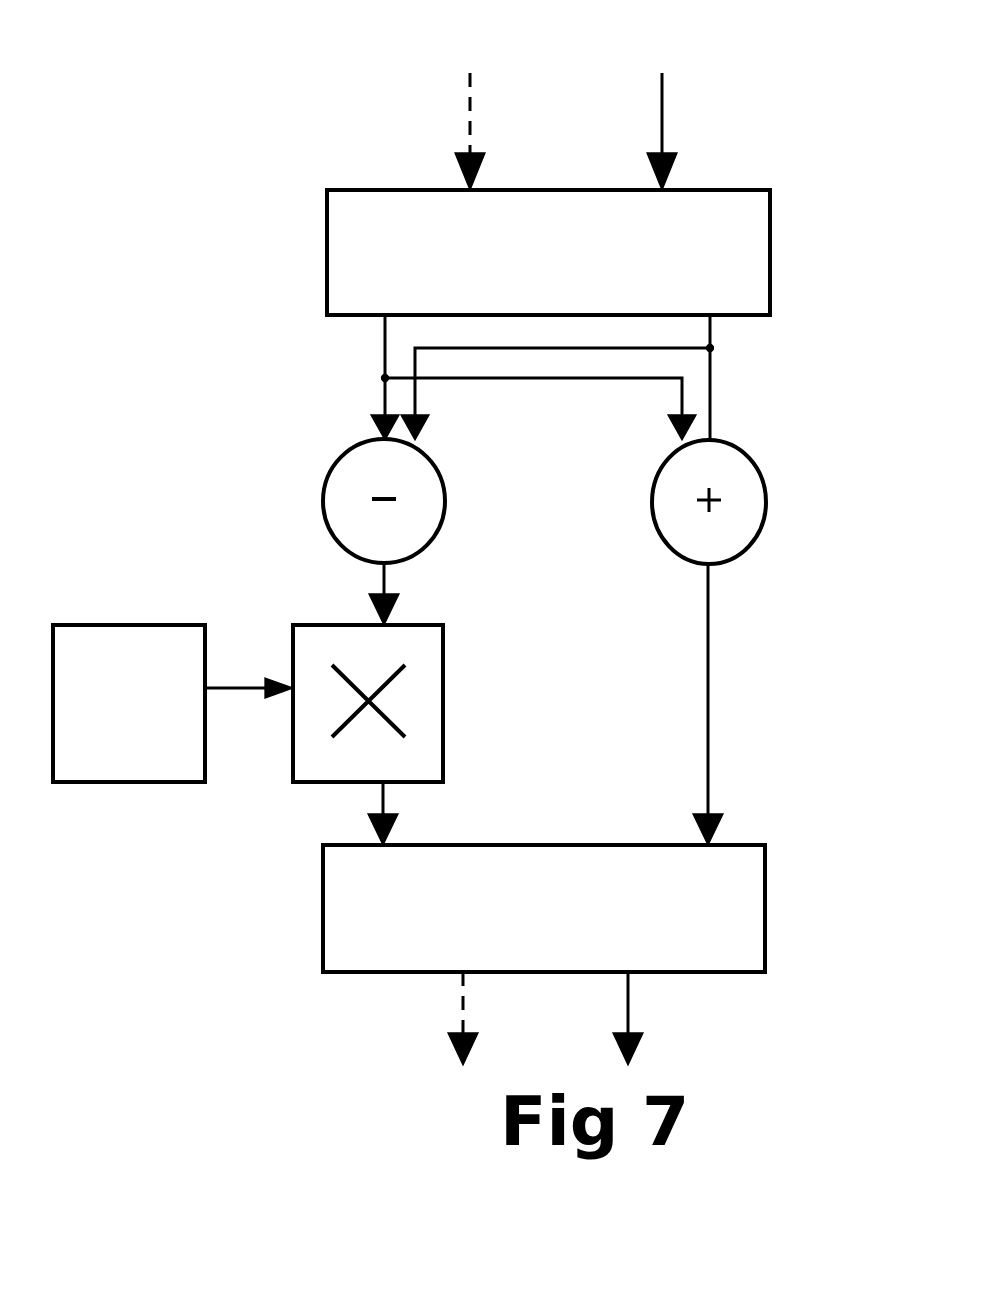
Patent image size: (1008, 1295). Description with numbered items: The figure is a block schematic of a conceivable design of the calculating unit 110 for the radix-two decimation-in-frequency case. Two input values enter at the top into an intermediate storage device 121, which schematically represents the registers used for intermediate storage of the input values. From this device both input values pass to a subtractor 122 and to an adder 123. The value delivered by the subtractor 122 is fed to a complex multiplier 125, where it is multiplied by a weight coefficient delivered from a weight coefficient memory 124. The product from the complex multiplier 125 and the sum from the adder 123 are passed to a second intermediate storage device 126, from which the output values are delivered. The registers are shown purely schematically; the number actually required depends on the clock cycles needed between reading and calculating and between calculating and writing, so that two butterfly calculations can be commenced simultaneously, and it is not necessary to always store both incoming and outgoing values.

The transform/processing unit 110 is at (268, 80).
The intermediate storage device 121 is at (327, 286).
The subtractor 122 is at (348, 457).
The adder 123 is at (765, 525).
The weight coefficient memory 124 is at (190, 625).
The complex multiplier 125 is at (443, 712).
The intermediate storage device 126 is at (765, 942).